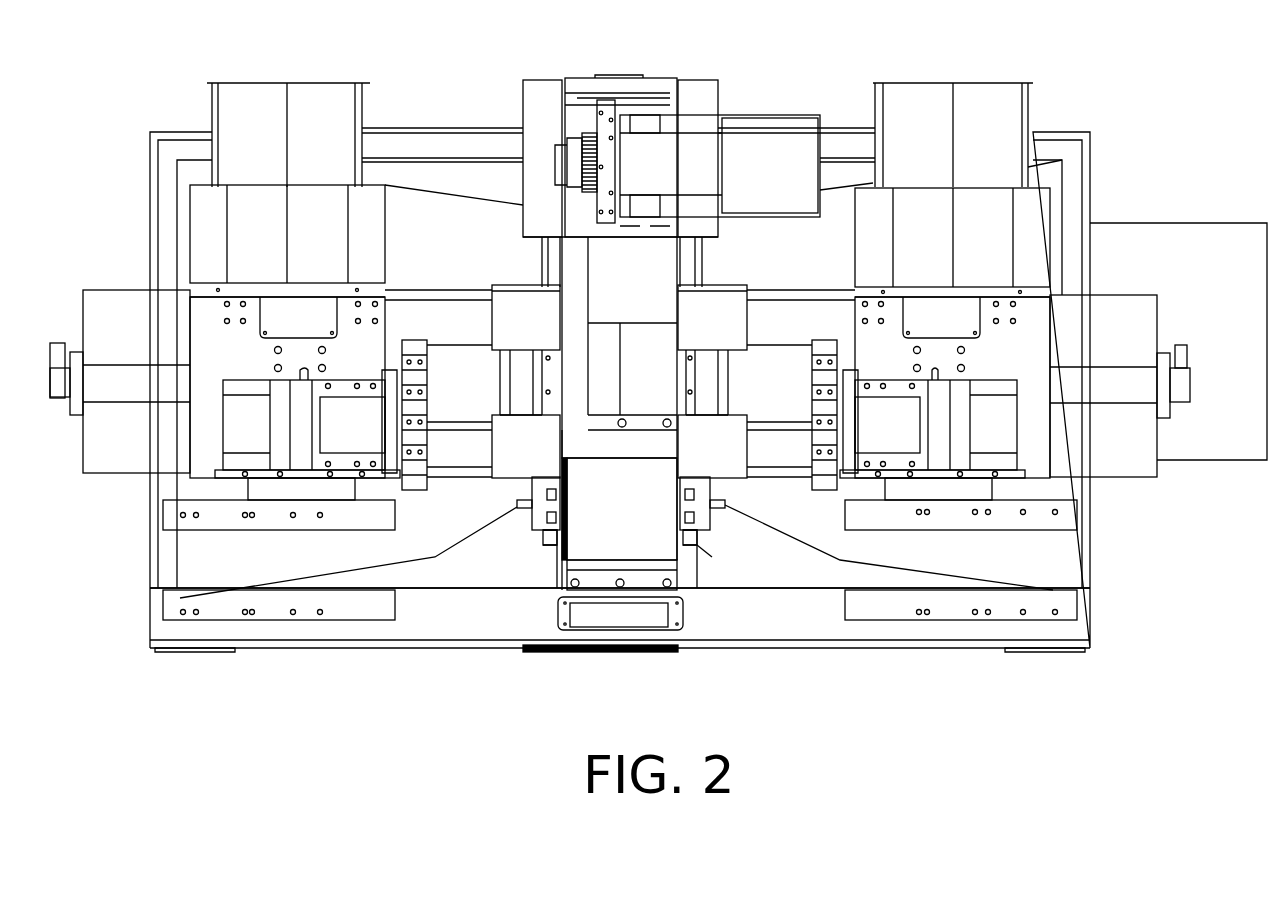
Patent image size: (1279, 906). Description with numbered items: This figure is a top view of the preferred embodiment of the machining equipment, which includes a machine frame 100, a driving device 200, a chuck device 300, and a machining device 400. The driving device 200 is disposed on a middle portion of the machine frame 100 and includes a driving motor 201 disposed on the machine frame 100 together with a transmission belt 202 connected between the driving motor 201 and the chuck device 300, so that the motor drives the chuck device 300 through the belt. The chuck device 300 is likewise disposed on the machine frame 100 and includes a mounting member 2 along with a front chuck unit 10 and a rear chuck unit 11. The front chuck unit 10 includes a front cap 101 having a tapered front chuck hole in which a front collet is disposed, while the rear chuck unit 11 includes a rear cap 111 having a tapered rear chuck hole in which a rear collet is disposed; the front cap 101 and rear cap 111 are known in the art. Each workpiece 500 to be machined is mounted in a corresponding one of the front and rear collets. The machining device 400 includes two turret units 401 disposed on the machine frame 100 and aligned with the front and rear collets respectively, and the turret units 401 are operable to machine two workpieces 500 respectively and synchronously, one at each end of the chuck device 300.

The machine frame 100 is at (1060, 133).
The driving device 200 is at (695, 113).
The driving motor 201 is at (705, 153).
The transmission belt 202 is at (572, 175).
The chuck device 300 is at (690, 592).
The machining device 400 is at (190, 265).
The turret unit 401 is at (355, 437).
The workpiece 500 is at (518, 508).
The front chuck unit 10 is at (553, 540).
The mounting member 2 is at (587, 568).
The front cap 101 is at (547, 557).
The rear cap 111 is at (712, 515).
The rear chuck unit 11 is at (707, 548).